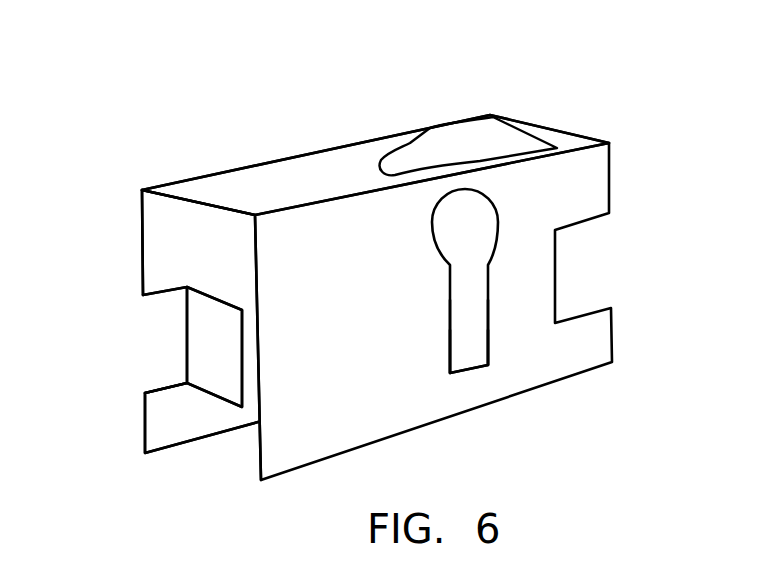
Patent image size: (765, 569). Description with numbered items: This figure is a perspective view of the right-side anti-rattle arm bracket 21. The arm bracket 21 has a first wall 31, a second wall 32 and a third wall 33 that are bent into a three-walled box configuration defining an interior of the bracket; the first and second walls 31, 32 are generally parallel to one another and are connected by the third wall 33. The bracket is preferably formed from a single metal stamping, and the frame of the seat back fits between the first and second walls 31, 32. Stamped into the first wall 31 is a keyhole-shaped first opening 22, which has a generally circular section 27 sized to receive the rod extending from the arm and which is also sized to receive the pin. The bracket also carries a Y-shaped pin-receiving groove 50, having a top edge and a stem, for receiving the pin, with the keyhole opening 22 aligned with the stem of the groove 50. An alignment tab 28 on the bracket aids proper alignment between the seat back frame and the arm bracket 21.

The arm bracket 21 is at (200, 138).
The first opening 22 is at (467, 347).
The generally circular section 27 is at (465, 232).
The alignment tab 28 is at (200, 343).
The first wall 31 is at (409, 349).
The second wall 32 is at (201, 335).
The third wall 33 is at (300, 167).
The pin-receiving groove 50 is at (455, 132).